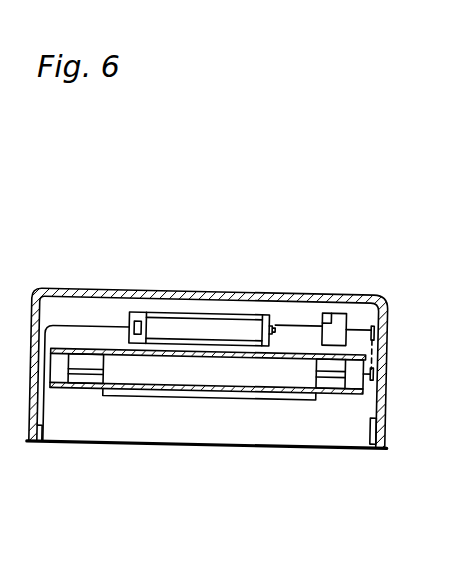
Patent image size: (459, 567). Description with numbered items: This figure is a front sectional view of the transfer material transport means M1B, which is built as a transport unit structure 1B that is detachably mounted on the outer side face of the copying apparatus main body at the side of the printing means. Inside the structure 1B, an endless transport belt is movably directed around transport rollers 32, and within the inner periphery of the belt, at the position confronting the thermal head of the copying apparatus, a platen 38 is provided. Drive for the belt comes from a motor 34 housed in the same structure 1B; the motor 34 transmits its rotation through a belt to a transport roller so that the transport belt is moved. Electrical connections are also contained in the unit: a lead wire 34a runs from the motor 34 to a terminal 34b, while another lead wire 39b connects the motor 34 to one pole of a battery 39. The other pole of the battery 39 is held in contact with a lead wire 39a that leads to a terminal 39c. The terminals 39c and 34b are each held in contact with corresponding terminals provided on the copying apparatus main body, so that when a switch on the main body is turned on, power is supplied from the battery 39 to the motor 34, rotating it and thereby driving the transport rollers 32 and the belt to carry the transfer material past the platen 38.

The transport unit structure 1B is at (347, 296).
The drive mechanism M1B is at (268, 225).
The battery 39 is at (138, 312).
The lead wire 39a is at (74, 312).
The lead wire 39b is at (292, 324).
The terminal 39c is at (48, 443).
The motor 34 is at (330, 316).
The lead wire 34a is at (377, 296).
The terminal 34b is at (375, 445).
The transport roller 32 is at (63, 378).
The platen 38 is at (112, 378).